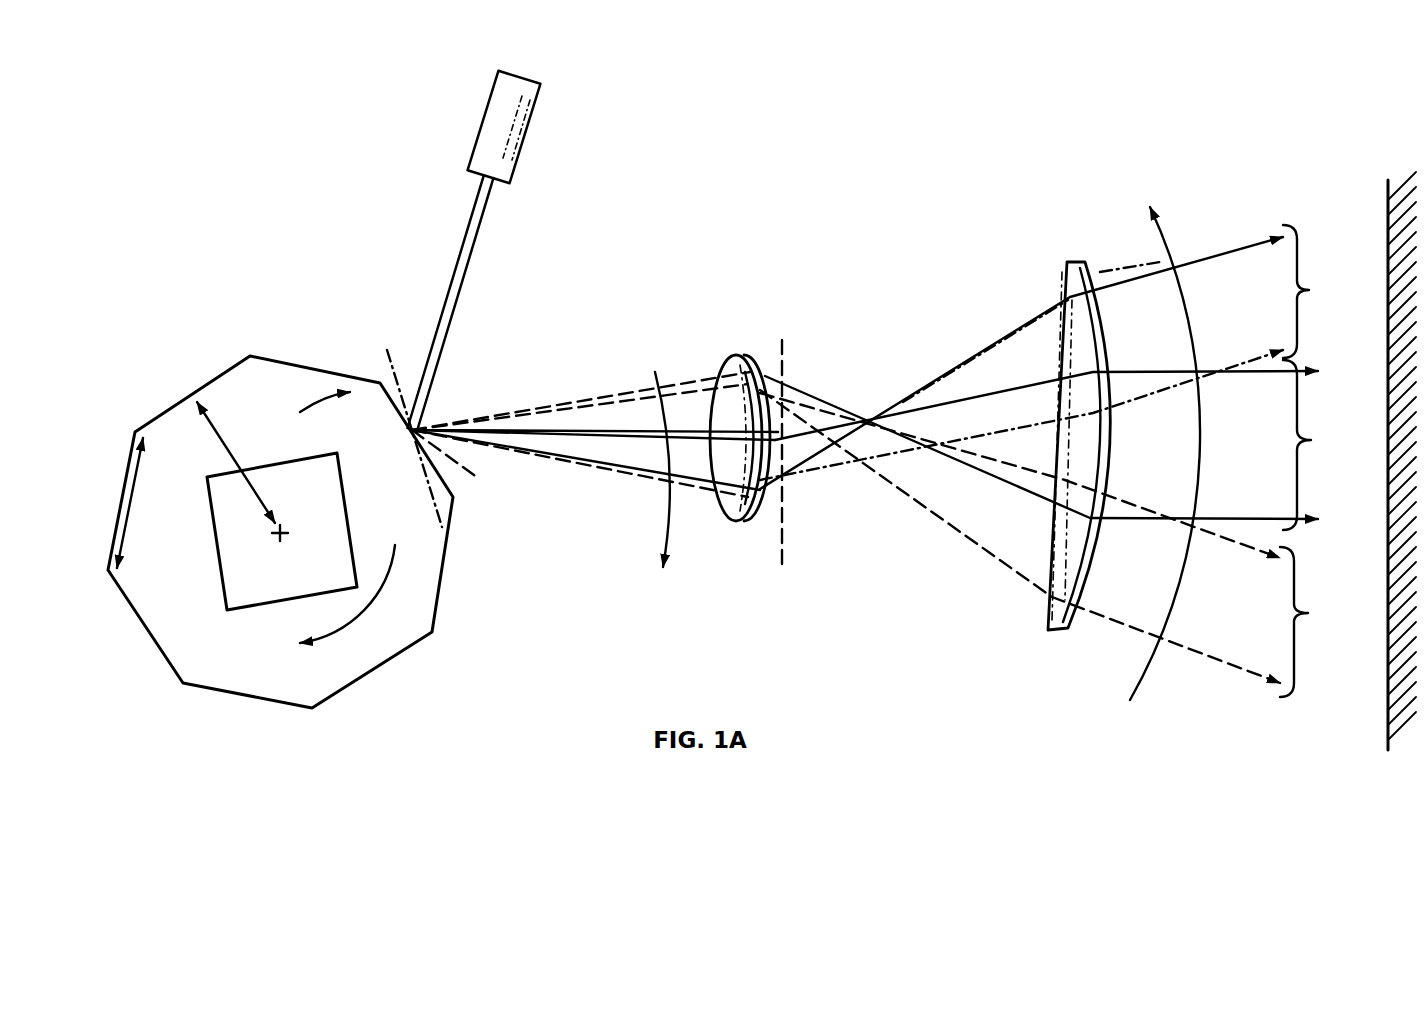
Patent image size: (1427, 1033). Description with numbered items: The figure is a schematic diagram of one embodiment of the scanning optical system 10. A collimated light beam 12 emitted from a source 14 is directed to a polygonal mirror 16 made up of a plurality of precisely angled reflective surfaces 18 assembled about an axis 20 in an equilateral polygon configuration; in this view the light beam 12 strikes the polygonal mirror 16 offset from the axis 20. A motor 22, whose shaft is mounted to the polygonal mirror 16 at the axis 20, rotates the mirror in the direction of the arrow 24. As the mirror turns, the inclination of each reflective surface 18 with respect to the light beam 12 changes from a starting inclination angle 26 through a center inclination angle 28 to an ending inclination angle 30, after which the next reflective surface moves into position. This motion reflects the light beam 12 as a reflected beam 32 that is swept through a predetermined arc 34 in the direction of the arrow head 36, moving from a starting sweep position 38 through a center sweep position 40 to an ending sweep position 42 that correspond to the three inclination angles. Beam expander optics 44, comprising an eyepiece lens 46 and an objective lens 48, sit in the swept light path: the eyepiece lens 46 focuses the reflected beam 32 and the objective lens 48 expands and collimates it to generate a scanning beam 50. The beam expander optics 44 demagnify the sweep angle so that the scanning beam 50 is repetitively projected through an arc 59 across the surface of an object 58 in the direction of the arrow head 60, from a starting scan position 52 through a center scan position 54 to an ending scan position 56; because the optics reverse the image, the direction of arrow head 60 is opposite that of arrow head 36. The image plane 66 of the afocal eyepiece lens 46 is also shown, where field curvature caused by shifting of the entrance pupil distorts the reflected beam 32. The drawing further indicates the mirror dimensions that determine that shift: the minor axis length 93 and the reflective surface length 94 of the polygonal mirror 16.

The scanning optical system 10 is at (278, 180).
The collimated light beam 12 is at (470, 230).
The source 14 is at (537, 112).
The polygonal mirror 16 is at (172, 727).
The reflective surfaces 18 is at (193, 398).
The axis 20 is at (288, 535).
The motor 22 is at (230, 530).
The arrow 24 is at (383, 598).
The starting inclination angle 26 is at (307, 410).
The center inclination angle 28 is at (382, 380).
The ending inclination angle 30 is at (395, 362).
The reflected beam 32 is at (503, 410).
The predetermined arc 34 is at (655, 372).
The arrow head 36 is at (663, 555).
The starting sweep position 38 is at (693, 387).
The center sweep position 40 is at (600, 433).
The ending sweep position 42 is at (593, 462).
The beam expander optics 44 is at (753, 537).
The eyepiece lens 46 is at (753, 363).
The objective lens 48 is at (1088, 267).
The scanning beam 50 is at (1107, 642).
The starting scan position 52 is at (1314, 622).
The center scan position 54 is at (1337, 445).
The ending scan position 56 is at (1314, 291).
The object 58 is at (1385, 700).
The arc 59 is at (1148, 667).
The arrow head 60 is at (1150, 207).
The image plane 66 is at (783, 363).
The minor axis length 93 is at (220, 440).
The reflective surface length 94 is at (133, 482).